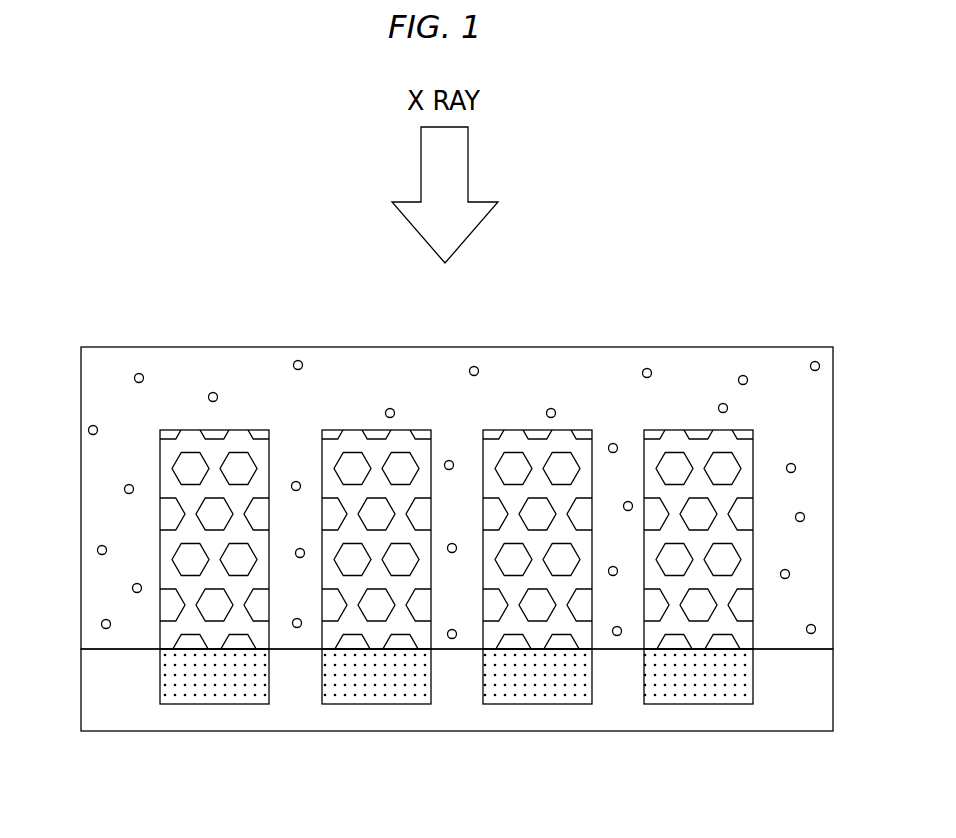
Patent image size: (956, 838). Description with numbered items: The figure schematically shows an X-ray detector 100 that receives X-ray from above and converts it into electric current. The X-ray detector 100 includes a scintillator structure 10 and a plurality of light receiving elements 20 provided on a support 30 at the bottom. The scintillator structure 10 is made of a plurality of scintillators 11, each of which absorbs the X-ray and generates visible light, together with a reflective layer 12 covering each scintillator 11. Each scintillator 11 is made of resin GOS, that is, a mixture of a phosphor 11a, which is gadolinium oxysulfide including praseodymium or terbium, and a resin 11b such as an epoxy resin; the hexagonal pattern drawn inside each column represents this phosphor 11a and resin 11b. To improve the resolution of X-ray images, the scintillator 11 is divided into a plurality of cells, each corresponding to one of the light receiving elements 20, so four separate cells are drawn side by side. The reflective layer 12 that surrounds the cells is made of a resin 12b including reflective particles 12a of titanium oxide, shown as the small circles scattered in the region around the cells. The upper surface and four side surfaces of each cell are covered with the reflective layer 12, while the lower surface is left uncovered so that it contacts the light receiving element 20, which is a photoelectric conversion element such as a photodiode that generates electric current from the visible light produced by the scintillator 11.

The X-ray detector 100 is at (448, 500).
The scintillator structure 10 is at (426, 441).
The scintillator 11 is at (456, 463).
The phosphor 11a is at (456, 487).
The resin 11b is at (240, 440).
The reflective layer 12 is at (457, 432).
The reflective particles 12a is at (387, 263).
The resin 12b is at (365, 373).
The light receiving element 20 is at (213, 693).
The support 30 is at (792, 713).